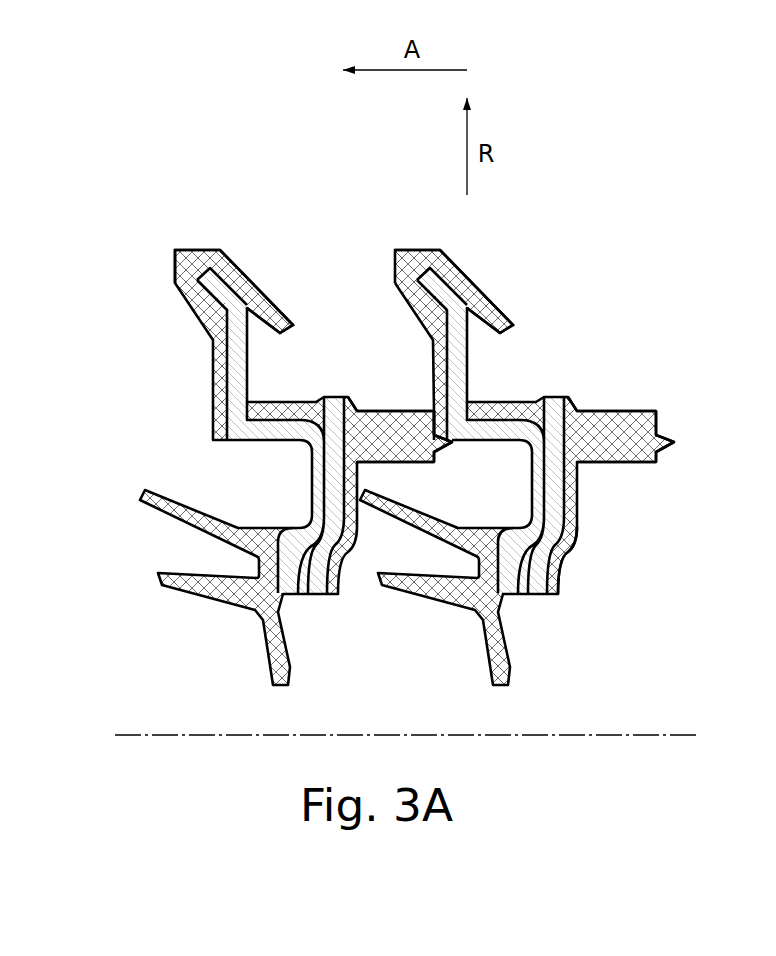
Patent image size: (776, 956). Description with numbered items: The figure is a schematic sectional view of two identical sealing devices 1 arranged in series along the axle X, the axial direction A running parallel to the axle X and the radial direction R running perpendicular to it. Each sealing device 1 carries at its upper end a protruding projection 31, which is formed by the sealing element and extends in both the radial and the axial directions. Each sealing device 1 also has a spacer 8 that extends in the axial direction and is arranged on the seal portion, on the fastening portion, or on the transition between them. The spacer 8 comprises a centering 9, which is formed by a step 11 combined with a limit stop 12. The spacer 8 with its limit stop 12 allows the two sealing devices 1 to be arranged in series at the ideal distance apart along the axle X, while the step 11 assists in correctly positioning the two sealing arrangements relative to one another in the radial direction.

The sealing device 1 is at (147, 187).
The protruding projection 31 is at (193, 247).
The spacer 8 is at (380, 409).
The limit stop 12 is at (442, 430).
The centering 9 is at (426, 451).
The step 11 is at (538, 557).
The axle x is at (584, 735).